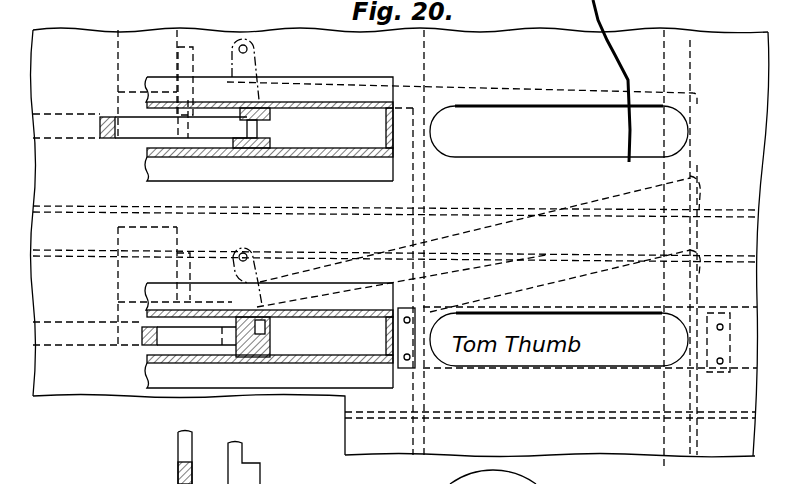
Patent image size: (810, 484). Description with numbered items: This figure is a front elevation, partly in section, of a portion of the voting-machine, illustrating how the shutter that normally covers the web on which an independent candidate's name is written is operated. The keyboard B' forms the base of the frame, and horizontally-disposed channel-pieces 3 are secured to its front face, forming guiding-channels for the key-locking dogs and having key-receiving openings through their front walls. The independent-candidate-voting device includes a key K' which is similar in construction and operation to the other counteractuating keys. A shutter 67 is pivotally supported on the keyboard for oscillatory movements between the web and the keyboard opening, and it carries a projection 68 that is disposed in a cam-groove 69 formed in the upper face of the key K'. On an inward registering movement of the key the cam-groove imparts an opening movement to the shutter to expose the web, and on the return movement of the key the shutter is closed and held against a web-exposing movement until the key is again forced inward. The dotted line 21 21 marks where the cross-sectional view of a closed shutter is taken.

The channel-piece 3 is at (243, 172).
The dotted line 21 21 is at (665, 247).
The shutter 67 is at (545, 211).
The projection 68 is at (290, 306).
The cam-groove 69 is at (268, 319).
The keyboard B' is at (419, 172).
The key K' is at (195, 375).